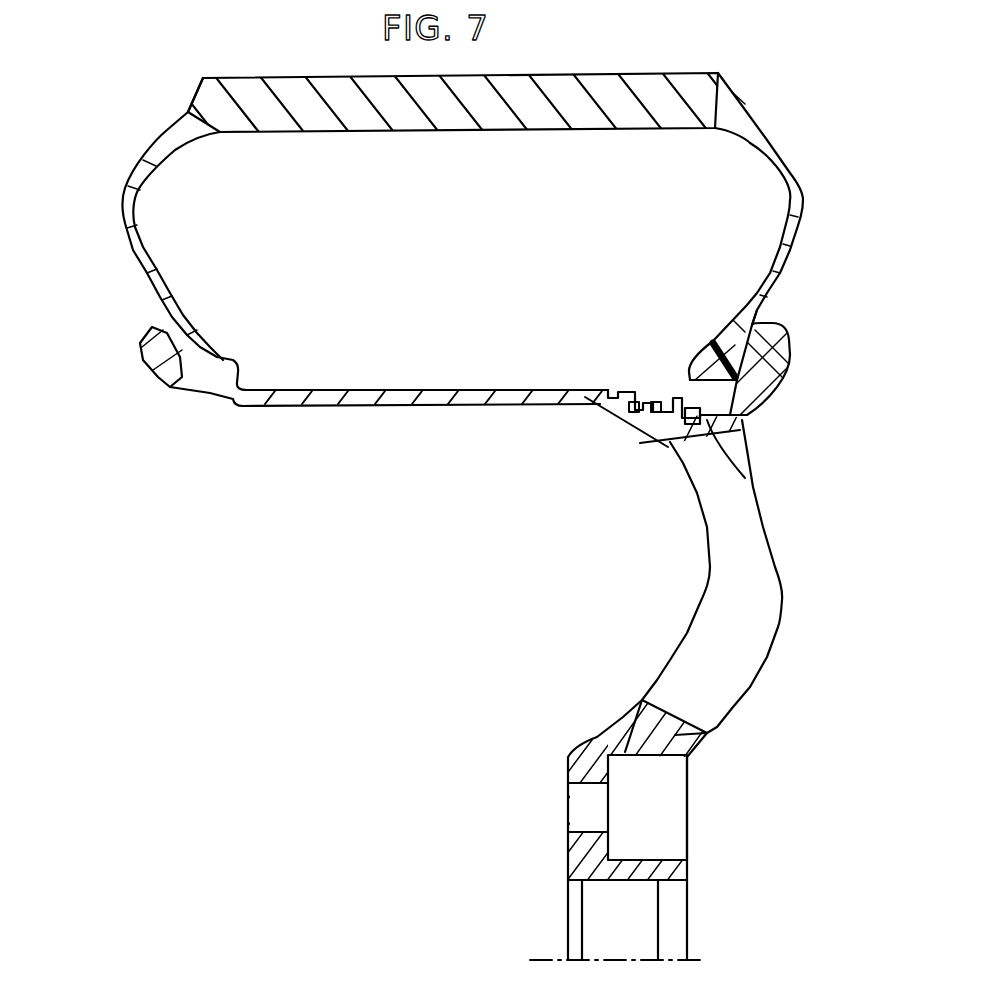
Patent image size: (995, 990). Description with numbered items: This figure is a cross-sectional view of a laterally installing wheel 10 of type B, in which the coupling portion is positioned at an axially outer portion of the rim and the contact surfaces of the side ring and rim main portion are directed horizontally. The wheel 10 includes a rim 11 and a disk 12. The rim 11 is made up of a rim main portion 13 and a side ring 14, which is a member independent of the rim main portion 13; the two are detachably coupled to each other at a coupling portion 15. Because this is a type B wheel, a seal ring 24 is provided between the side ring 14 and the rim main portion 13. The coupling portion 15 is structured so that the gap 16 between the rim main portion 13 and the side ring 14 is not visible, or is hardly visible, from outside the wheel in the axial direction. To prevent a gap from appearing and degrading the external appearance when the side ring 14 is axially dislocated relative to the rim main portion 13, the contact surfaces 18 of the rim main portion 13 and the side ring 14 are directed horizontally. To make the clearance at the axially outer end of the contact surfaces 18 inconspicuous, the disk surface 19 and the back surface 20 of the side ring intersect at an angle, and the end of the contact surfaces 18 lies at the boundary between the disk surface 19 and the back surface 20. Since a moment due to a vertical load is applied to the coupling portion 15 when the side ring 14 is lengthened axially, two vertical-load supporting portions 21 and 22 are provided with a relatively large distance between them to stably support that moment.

The laterally installing wheel 10 is at (125, 312).
The rim 11 is at (213, 397).
The disk 12 is at (697, 743).
The rim main portion 13 is at (397, 406).
The side ring 14 is at (775, 337).
The coupling portion 15 is at (658, 412).
The gap 16 is at (743, 418).
The contact surfaces 18 is at (780, 363).
The disk surface 19 is at (745, 422).
The back surface of the side ring 20 is at (763, 413).
The vertical-load supporting portion 21 is at (618, 413).
The vertical-load supporting portion 22 is at (752, 485).
The seal ring 24 is at (684, 398).